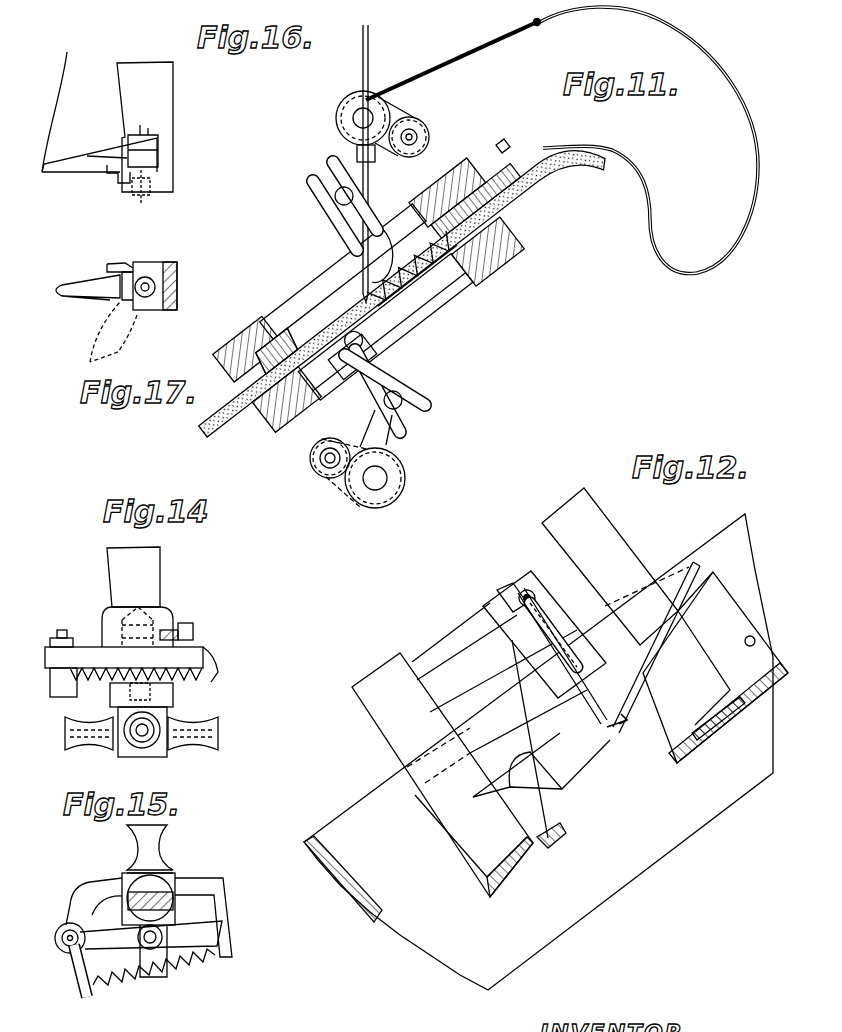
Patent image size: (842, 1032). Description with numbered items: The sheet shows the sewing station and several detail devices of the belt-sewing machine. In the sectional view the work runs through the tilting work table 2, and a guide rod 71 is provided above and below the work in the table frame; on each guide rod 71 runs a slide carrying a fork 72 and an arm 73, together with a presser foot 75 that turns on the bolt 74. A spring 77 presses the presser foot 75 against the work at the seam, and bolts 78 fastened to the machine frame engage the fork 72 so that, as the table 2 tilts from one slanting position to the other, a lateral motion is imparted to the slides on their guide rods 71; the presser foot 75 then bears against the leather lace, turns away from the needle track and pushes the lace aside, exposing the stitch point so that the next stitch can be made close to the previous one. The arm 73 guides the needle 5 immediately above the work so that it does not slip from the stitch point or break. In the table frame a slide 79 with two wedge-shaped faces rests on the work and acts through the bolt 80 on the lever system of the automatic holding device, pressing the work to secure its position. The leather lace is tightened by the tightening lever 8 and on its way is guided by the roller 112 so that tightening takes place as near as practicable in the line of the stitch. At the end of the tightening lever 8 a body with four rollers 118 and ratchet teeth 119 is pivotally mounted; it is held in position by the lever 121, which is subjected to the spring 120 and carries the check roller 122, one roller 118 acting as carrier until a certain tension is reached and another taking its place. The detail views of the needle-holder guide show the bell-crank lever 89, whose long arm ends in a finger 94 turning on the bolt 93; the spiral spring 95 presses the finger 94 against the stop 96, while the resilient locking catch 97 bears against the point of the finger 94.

In FIG. 11, the work table 2 is at (240, 330).
In FIG. 12, the work table 2 is at (442, 775).
In FIG. 11, the needle 5 is at (362, 72).
In FIG. 14, the tightening lever 8 is at (148, 577).
In FIG. 11, the guide rod 71 is at (296, 312).
In FIG. 12, the guide rod 71 is at (462, 640).
In FIG. 11, the fork 72 is at (330, 215).
In FIG. 12, the fork 72 is at (520, 580).
In FIG. 12, the arm 73 is at (555, 745).
In FIG. 12, the bolt 74 is at (552, 615).
In FIG. 11, the presser foot 75 is at (368, 265).
In FIG. 12, the presser foot 75 is at (625, 675).
In FIG. 12, the spring 77 is at (540, 650).
In FIG. 11, the bolts 78 is at (340, 178).
In FIG. 12, the slide 79 is at (570, 840).
In FIG. 11, the bolt 80 is at (508, 146).
In FIG. 12, the bolt 80 is at (754, 636).
In FIG. 16, the bell-crank lever 89 is at (165, 100).
In FIG. 17, the bell-crank lever 89 is at (177, 278).
In FIG. 16, the bolt 93 is at (148, 192).
In FIG. 16, the finger 94 is at (72, 168).
In FIG. 17, the finger 94 is at (67, 288).
In FIG. 16, the spiral spring 95 is at (158, 150).
In FIG. 17, the spiral spring 95 is at (165, 312).
In FIG. 16, the stop 96 is at (114, 175).
In FIG. 17, the stop 96 is at (117, 265).
In FIG. 16, the resilient locking catch 97 is at (60, 100).
In FIG. 11, the guide roller 112 is at (430, 132).
In FIG. 14, the rollers 118 is at (195, 745).
In FIG. 15, the rollers 118 is at (160, 853).
In FIG. 15, the ratchet teeth 119 is at (122, 884).
In FIG. 14, the spring 120 is at (207, 652).
In FIG. 15, the spring 120 is at (200, 970).
In FIG. 15, the lever 121 is at (95, 943).
In FIG. 14, the check roller 122 is at (178, 697).
In FIG. 15, the check roller 122 is at (217, 938).